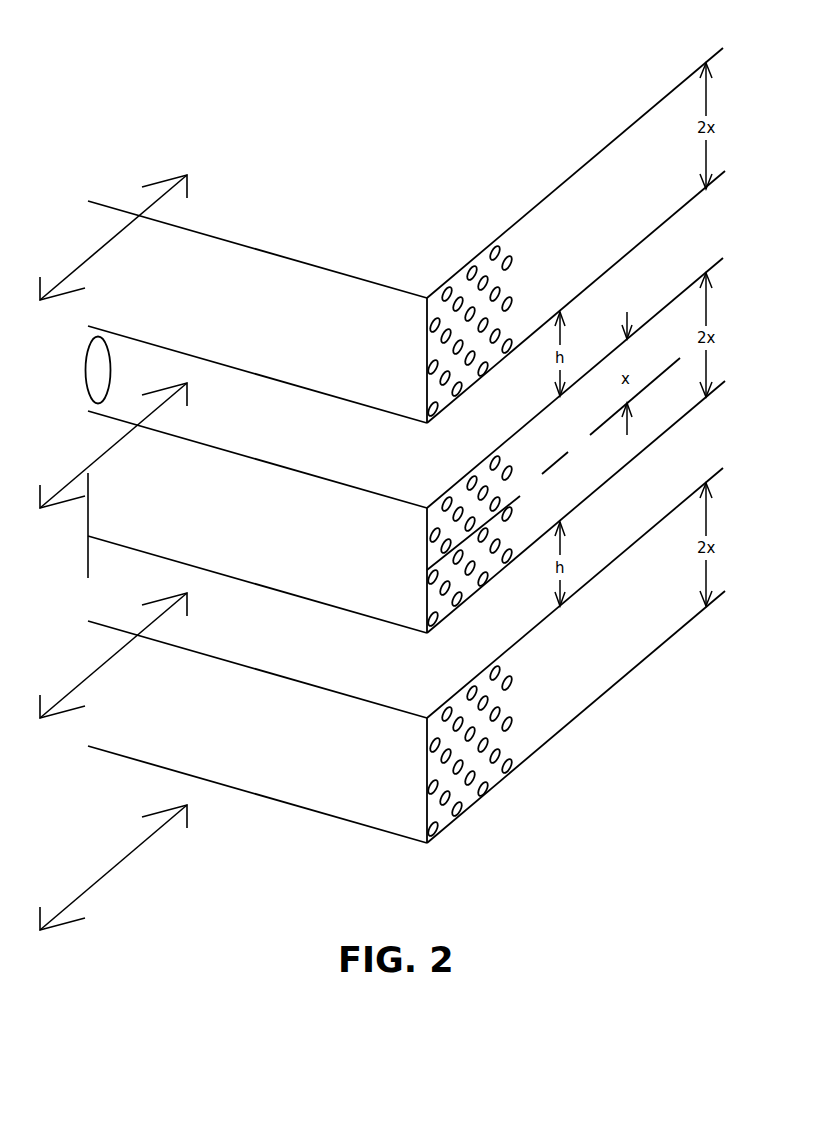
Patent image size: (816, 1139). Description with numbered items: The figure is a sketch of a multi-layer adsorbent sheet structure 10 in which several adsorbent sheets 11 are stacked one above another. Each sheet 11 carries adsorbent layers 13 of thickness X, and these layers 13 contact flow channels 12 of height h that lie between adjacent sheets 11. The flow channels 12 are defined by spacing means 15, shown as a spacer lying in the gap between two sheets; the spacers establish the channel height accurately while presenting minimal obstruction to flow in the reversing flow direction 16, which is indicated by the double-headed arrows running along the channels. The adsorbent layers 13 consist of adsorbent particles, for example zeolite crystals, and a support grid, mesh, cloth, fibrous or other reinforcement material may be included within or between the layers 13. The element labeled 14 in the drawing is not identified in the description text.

The multi-layer adsorbent sheet structure 10 is at (172, 140).
The adsorbent sheet 11 is at (224, 519).
The flow channel 12 is at (146, 385).
The adsorbent layer 13 is at (312, 473).
The upper surface of layer 14 is at (575, 383).
The spacing means 15 is at (93, 370).
The reversing flow direction 16 is at (88, 578).